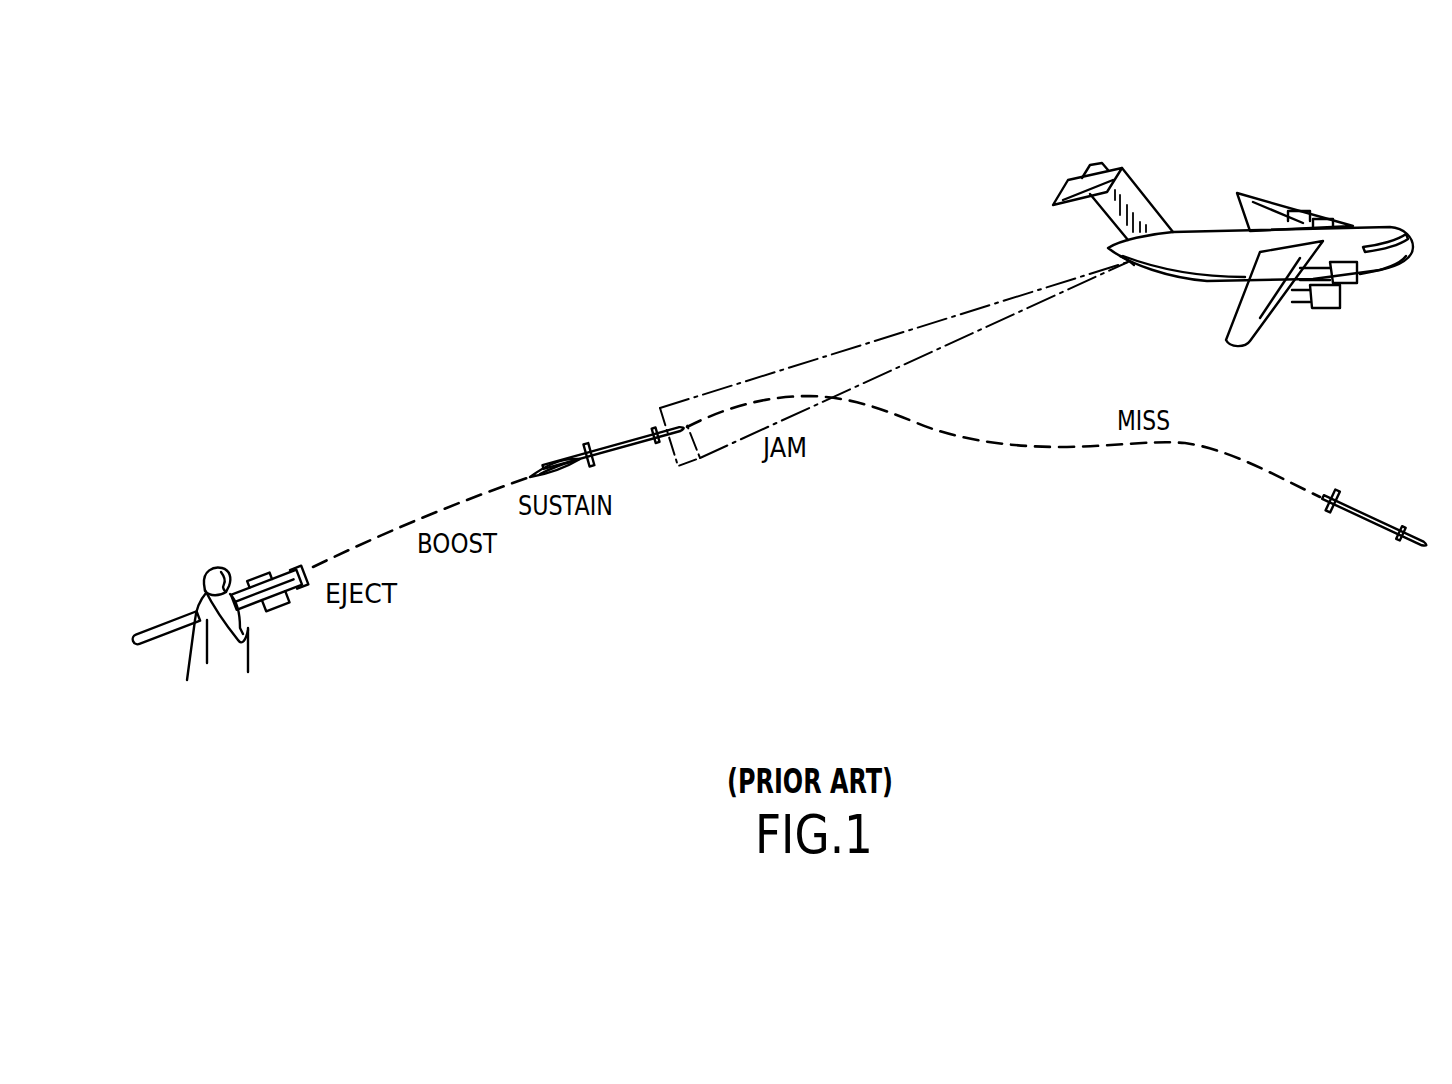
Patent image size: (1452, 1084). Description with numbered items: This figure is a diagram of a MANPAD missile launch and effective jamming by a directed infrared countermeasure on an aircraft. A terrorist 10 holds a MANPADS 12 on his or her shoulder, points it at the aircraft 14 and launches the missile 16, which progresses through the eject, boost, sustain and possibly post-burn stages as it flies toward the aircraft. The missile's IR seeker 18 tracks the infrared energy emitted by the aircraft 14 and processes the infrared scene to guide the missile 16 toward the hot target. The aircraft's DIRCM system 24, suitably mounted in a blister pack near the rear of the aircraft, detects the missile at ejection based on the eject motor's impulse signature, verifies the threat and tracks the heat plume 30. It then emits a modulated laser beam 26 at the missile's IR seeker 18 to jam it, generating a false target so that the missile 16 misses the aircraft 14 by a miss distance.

The terrorist 10 is at (197, 567).
The MANPADS 12 is at (280, 567).
The aircraft 14 is at (1220, 234).
The missile 16 is at (608, 447).
The IR seeker 18 is at (690, 455).
The DIRCM system 24 is at (1120, 258).
The modulated laser beam 26 is at (743, 393).
The heat plume 30 is at (541, 462).